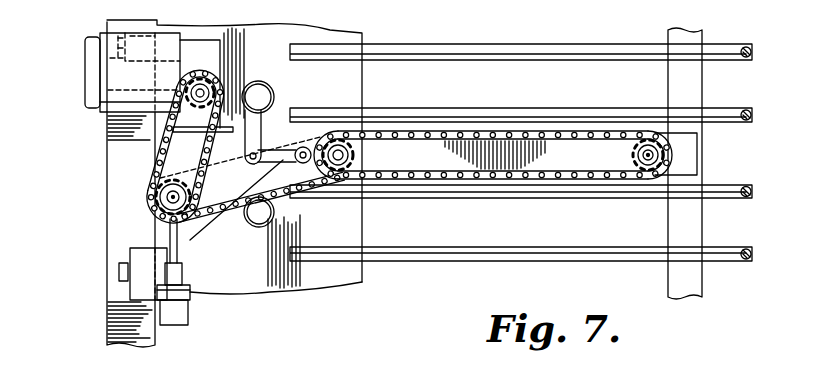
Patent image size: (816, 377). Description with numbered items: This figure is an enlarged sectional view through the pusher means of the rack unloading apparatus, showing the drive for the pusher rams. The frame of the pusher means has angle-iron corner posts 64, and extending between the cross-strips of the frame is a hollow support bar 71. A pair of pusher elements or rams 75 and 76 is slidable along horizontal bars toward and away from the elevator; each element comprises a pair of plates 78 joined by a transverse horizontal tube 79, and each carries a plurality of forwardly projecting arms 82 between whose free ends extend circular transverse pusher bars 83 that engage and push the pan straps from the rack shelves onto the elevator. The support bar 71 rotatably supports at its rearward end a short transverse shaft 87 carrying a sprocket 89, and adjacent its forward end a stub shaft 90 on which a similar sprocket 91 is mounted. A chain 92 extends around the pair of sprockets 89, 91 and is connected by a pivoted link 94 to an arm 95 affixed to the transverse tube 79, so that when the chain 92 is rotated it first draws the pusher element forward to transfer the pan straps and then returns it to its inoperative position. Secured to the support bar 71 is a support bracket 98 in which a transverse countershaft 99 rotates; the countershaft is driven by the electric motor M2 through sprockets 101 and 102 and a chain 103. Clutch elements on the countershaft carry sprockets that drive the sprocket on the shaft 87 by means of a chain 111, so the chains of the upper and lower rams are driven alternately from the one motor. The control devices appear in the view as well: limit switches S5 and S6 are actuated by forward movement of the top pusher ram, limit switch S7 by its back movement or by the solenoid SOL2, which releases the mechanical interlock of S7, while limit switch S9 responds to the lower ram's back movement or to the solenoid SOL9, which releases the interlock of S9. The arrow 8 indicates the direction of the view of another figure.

The view direction arrow for FIG. 8 is at (97, 210).
The angle-iron corner post 64 is at (135, 346).
The hollow support bar 71 is at (697, 164).
The pusher element 75 is at (384, 36).
The pusher element 76 is at (341, 294).
The plate 78 is at (282, 33).
The transverse horizontal tube 79 is at (272, 92).
The forwardly projecting arm 82 is at (586, 76).
The pusher bar 83 is at (752, 48).
The short transverse shaft 87 is at (356, 138).
The sprocket 89 is at (357, 165).
The stub shaft 90 is at (645, 163).
The sprocket 91 is at (630, 149).
The chain 92 is at (535, 180).
The pivoted link 94 is at (285, 162).
The arm 95 is at (265, 130).
The support bracket 98 is at (190, 297).
The transverse countershaft 99 is at (154, 212).
The sprocket 101 is at (200, 75).
The sprocket 102 is at (147, 178).
The chain 103 is at (153, 143).
The chain 111 is at (229, 209).
The motor M2 is at (93, 95).
The limit switch S5 is at (117, 48).
The limit switch S6 is at (112, 58).
The limit switch S7 is at (117, 40).
The limit switch S9 is at (118, 266).
The solenoid SOL2 is at (113, 33).
The solenoid SOL9 is at (115, 282).